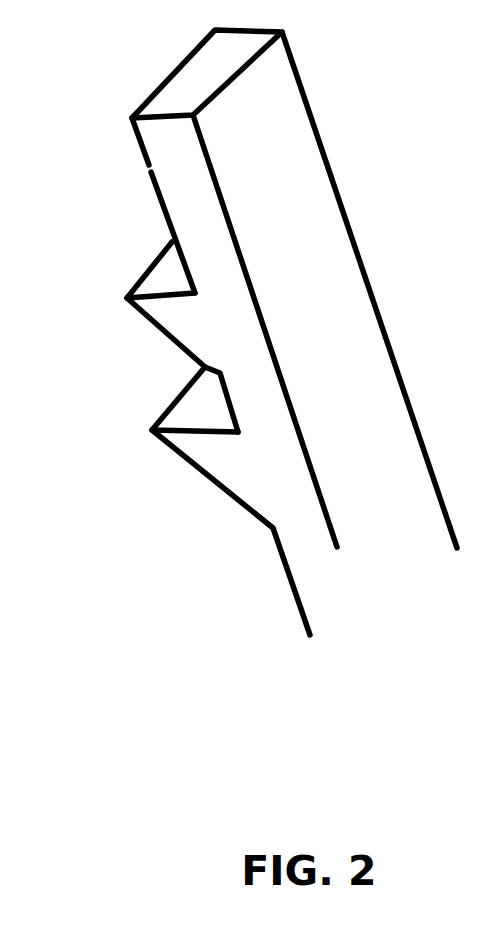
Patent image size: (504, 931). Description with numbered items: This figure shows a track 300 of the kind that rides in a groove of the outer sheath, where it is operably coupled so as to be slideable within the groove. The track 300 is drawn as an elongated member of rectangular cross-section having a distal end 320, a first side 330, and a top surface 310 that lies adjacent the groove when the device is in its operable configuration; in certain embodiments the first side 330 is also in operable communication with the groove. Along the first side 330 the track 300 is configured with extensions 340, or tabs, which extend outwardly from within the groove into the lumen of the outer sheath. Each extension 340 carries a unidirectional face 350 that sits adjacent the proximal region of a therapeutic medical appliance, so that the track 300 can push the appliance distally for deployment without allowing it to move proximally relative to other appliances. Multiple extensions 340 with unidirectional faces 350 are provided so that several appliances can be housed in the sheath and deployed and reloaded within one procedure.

The track 300 is at (251, 332).
The top surface 310 is at (363, 300).
The distal end 320 is at (180, 74).
The first side 330 is at (161, 162).
The extensions 340 is at (162, 312).
The unidirectional faces 350 is at (188, 406).